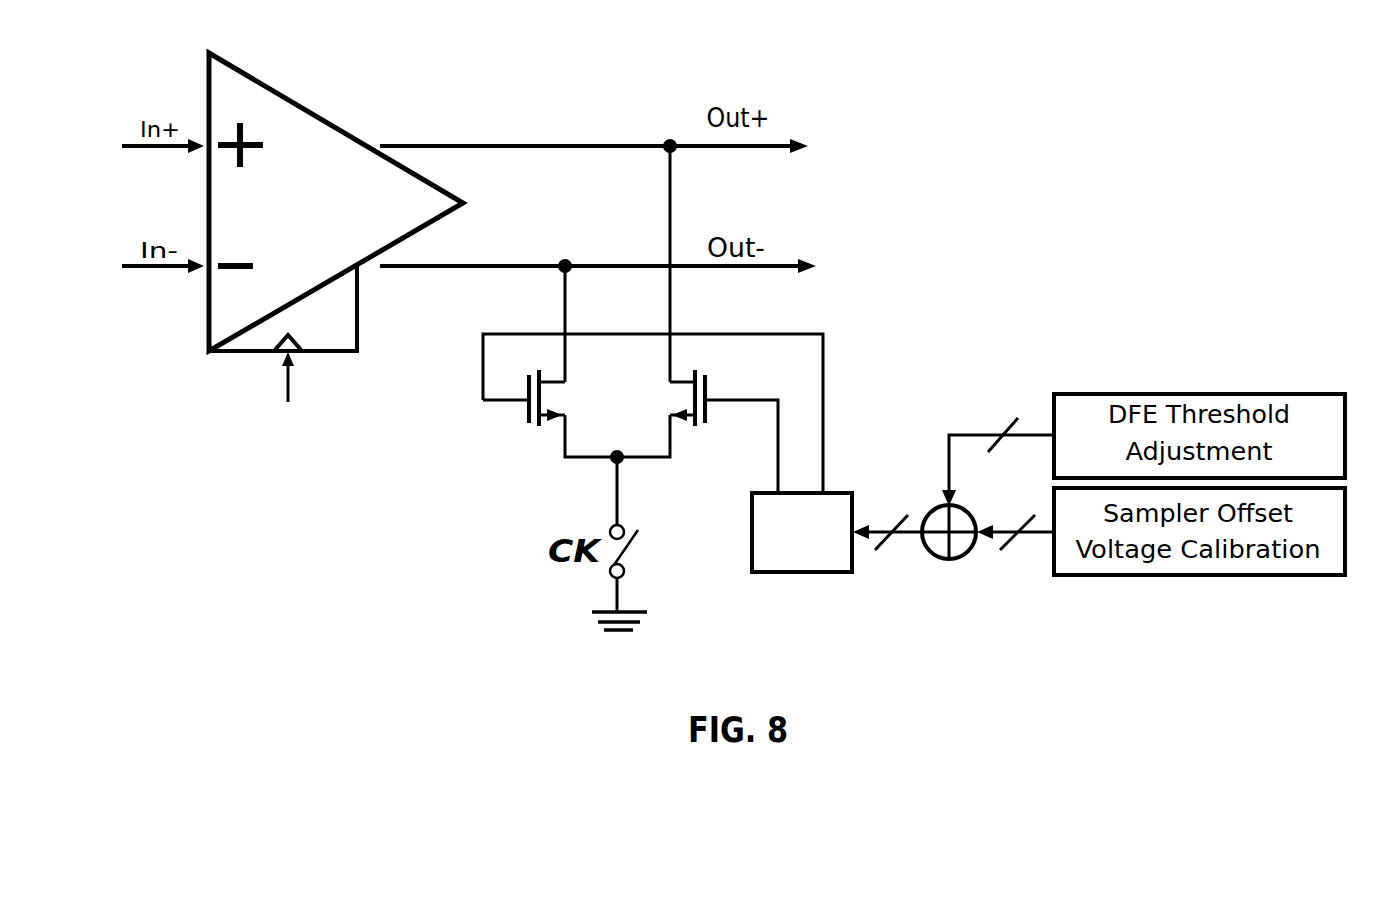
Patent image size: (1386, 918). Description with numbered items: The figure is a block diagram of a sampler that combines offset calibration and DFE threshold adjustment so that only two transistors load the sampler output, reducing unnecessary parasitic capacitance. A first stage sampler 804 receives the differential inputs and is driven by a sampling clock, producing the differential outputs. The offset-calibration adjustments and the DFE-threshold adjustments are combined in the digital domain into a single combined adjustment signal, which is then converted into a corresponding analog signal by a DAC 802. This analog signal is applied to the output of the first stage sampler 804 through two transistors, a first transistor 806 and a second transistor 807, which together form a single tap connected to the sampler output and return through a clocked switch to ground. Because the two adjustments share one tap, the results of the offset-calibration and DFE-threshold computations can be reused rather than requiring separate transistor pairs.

The first stage sampler 804 is at (329, 242).
The transistor M1 806 is at (563, 401).
The transistor M2 807 is at (668, 401).
The DAC 802 is at (802, 547).